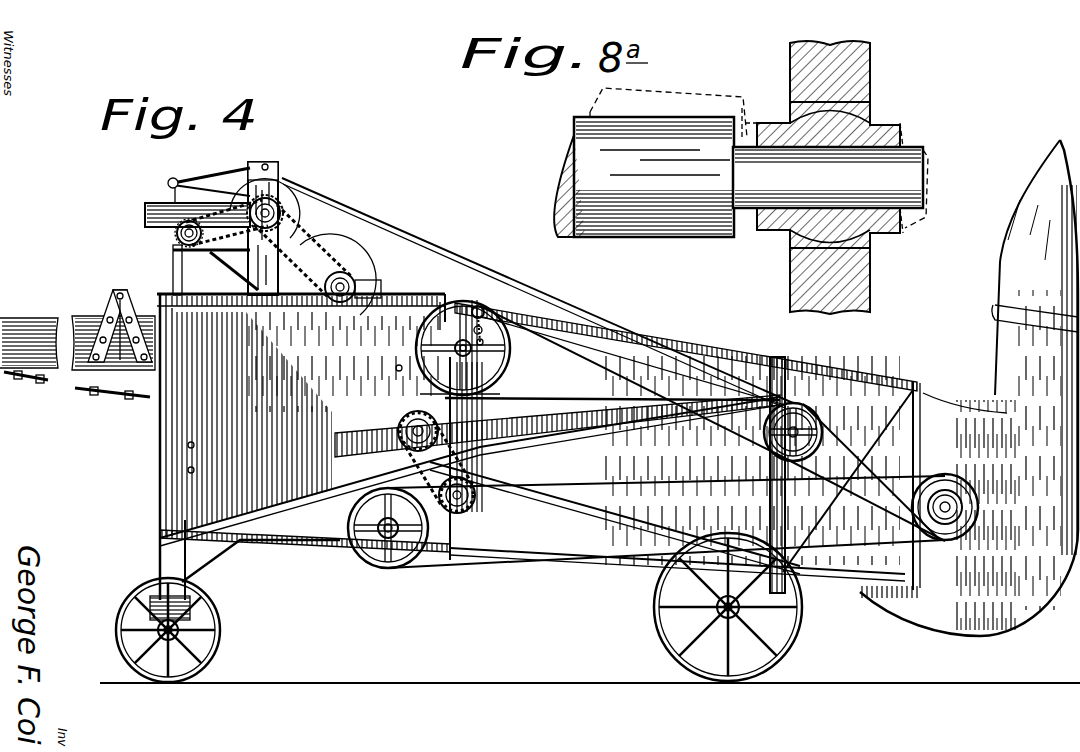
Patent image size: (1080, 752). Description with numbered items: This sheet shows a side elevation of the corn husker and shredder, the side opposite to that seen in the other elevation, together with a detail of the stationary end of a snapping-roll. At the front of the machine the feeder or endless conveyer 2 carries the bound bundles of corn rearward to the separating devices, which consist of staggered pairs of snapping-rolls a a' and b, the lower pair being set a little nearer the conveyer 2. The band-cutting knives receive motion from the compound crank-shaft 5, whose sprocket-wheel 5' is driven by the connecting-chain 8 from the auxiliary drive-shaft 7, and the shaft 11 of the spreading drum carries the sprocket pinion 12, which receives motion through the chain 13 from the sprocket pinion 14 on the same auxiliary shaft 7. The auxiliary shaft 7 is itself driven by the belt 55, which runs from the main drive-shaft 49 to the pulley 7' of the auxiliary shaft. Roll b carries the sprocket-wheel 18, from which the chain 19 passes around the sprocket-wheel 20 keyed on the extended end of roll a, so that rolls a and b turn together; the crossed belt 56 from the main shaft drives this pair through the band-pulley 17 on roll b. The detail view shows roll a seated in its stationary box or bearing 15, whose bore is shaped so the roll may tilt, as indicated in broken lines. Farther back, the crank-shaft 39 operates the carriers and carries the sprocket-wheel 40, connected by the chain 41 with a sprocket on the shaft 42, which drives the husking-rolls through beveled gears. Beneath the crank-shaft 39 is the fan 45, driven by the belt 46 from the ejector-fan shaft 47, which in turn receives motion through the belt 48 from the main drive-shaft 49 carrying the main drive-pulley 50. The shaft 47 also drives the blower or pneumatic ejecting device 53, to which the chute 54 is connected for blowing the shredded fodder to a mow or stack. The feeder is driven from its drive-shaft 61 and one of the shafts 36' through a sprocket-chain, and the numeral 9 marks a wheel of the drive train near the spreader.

In FIG. 4, the feeder or endless conveyer 2 is at (45, 385).
In FIG. 4, the compound crank-shaft 5 is at (165, 237).
In FIG. 4, the sprocket-wheel 5' is at (159, 233).
In FIG. 4, the auxiliary drive-shaft 7 is at (277, 192).
In FIG. 4, the pulley 7' is at (293, 201).
In FIG. 4, the connecting-chain 8 is at (218, 178).
In FIG. 4, the wheel 9 is at (364, 266).
In FIG. 4, the shaft 11 is at (358, 281).
In FIG. 4, the sprocket wheel or pinion 12 is at (345, 265).
In FIG. 4, the chain 13 is at (300, 240).
In FIG. 4, the sprocket wheel or pinion 14 is at (279, 176).
In FIG. 8a, the stationary box or bearing 15 is at (790, 244).
In FIG. 4, the chain 17 is at (500, 356).
In FIG. 4, the sprocket-wheel 18 is at (470, 356).
In FIG. 4, the chain 19 is at (484, 331).
In FIG. 4, the sprocket-wheel 20 is at (483, 306).
In FIG. 4, the shafts 36' is at (153, 467).
In FIG. 4, the crank-shaft 39 is at (474, 500).
In FIG. 4, the sprocket-wheel 40 is at (468, 504).
In FIG. 4, the chain 41 is at (412, 462).
In FIG. 4, the shaft 42 is at (402, 424).
In FIG. 4, the fan 45 is at (368, 552).
In FIG. 4, the belt 46 is at (450, 568).
In FIG. 4, the ejector-fan shaft 47 is at (960, 508).
In FIG. 4, the belt 48 is at (862, 516).
In FIG. 4, the main drive-shaft 49 is at (810, 416).
In FIG. 4, the main drive-pulley 50 is at (822, 424).
In FIG. 4, the blower or pneumatic ejecting device 53 is at (975, 516).
In FIG. 4, the chute 54 is at (1000, 256).
In FIG. 4, the belt 55 is at (455, 252).
In FIG. 4, the crossed belt 56 is at (700, 432).
In FIG. 4, the drive-shaft of the feeder 61 is at (396, 368).
In FIG. 4, the snapping-roll a is at (463, 334).
In FIG. 8a, the snapping-roll a is at (741, 162).
In FIG. 4, the snapping-roll a' is at (506, 348).
In FIG. 4, the snapping-roll b is at (455, 356).